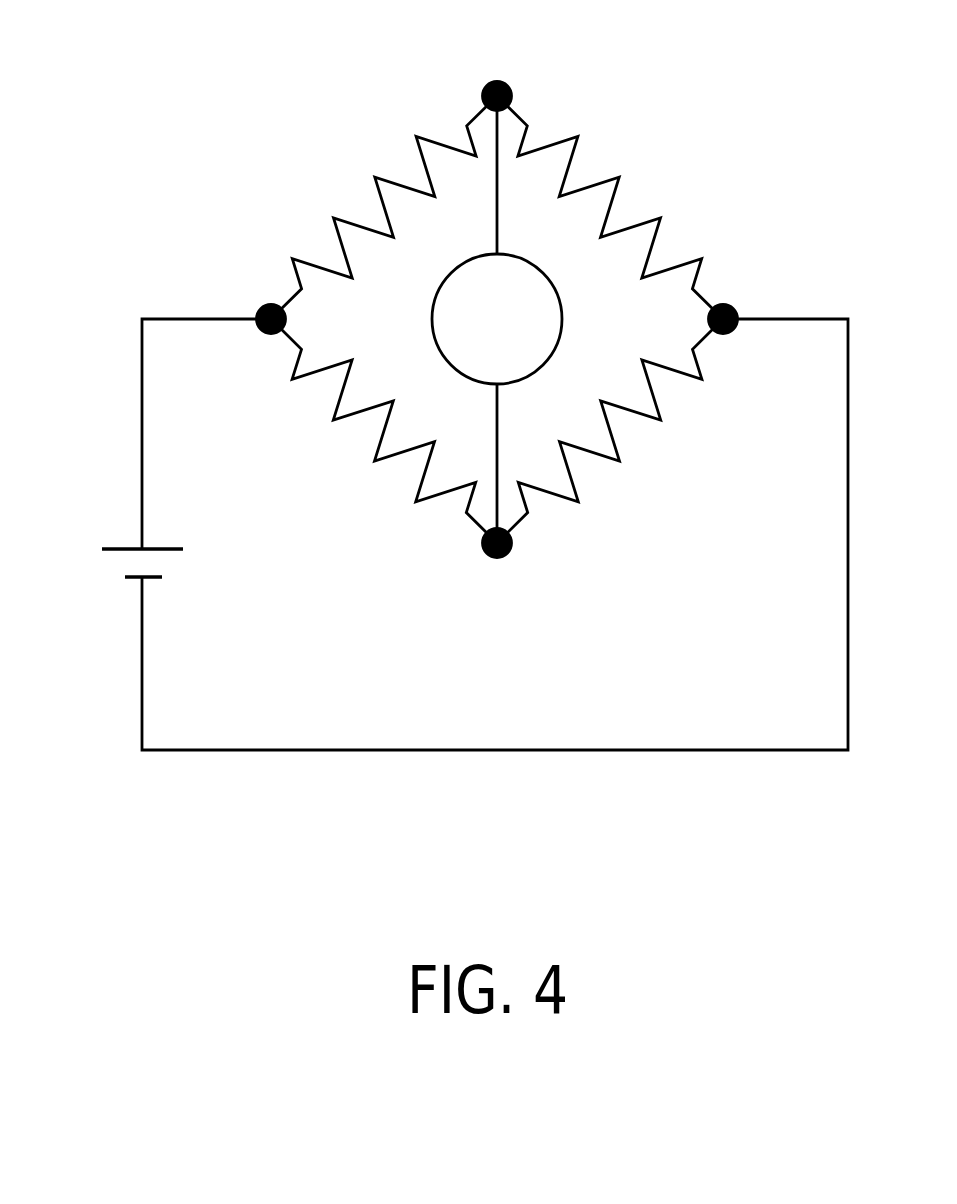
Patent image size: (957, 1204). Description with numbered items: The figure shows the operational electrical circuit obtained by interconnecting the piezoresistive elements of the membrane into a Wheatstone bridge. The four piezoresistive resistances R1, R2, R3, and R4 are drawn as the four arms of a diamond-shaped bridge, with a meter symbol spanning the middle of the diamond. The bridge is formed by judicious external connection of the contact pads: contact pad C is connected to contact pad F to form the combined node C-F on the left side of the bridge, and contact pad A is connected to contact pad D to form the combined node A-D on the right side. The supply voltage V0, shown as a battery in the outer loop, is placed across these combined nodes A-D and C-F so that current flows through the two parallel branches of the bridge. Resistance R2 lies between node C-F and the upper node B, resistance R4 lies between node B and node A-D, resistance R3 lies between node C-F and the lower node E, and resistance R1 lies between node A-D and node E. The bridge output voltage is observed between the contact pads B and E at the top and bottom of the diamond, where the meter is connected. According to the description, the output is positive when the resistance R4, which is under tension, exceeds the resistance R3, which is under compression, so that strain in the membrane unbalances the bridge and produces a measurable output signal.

The piezoresistive element resistance R1 is at (610, 431).
The piezoresistive element resistance R2 is at (384, 207).
The piezoresistive element resistance R3 is at (384, 431).
The piezoresistive element resistance R4 is at (610, 207).
The contact pad B is at (518, 74).
The contact pad E is at (514, 570).
The combined contact pads C/F C-F is at (225, 297).
The combined contact pads A/D A-D is at (769, 298).
The supply voltage V0 is at (107, 562).